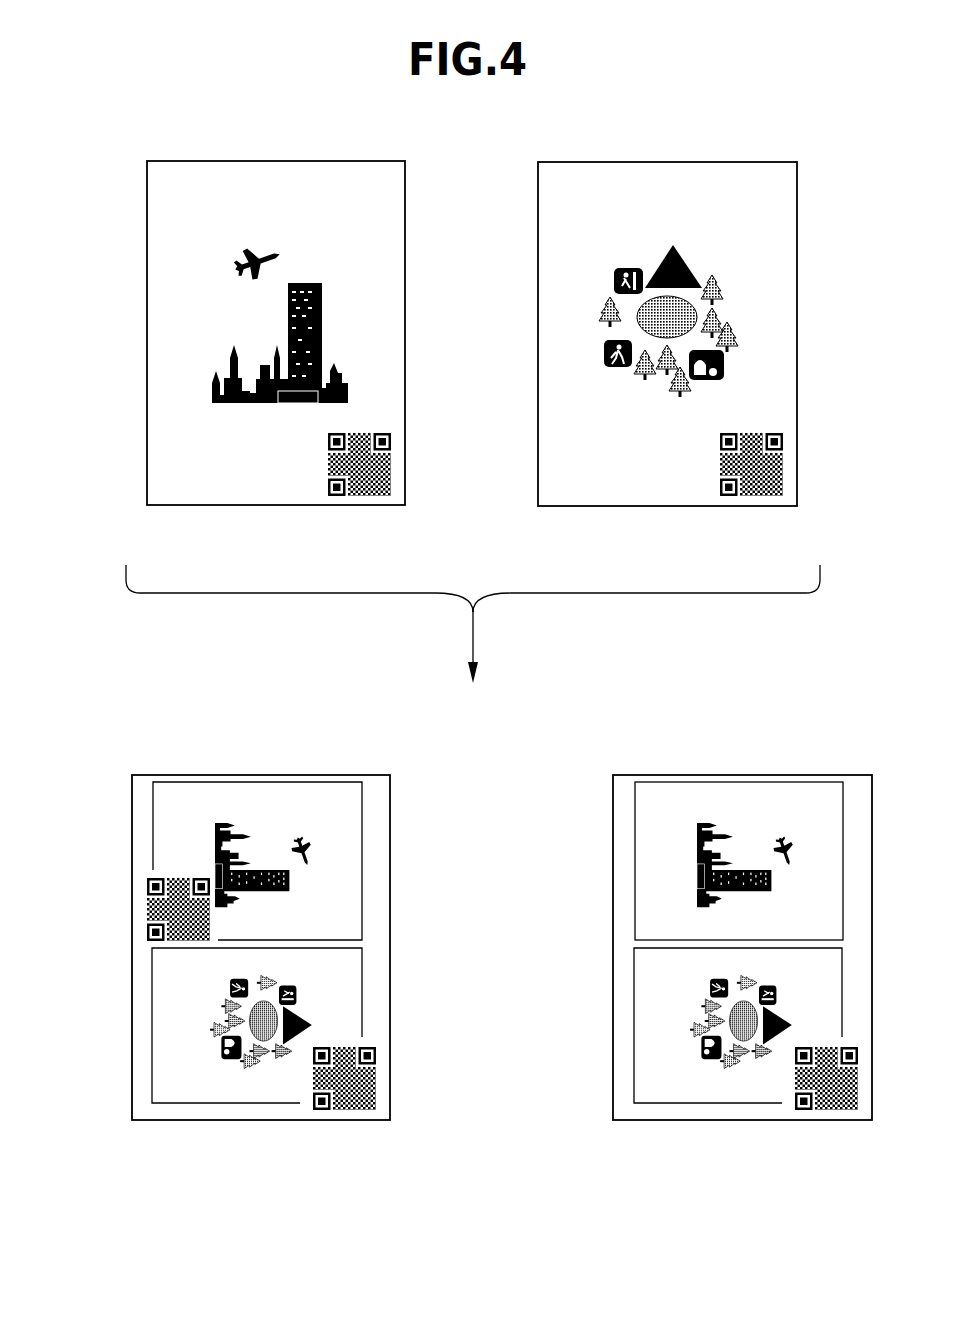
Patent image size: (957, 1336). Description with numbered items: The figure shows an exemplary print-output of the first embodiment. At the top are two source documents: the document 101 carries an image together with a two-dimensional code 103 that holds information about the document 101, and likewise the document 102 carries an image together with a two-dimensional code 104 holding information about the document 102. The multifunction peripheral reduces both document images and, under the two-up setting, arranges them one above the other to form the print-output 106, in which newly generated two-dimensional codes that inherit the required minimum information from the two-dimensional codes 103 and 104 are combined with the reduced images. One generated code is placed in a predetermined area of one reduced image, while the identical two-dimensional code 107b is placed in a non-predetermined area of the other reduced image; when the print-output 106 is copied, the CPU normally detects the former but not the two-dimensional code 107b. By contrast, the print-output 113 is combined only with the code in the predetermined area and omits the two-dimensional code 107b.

The document 101 is at (276, 332).
The document 102 is at (667, 332).
The two-dimensional code 103 is at (352, 500).
The two-dimensional code 104 is at (748, 500).
The print-output 106 is at (217, 946).
The two-dimensional code 107b is at (147, 910).
The print-output 113 is at (742, 946).